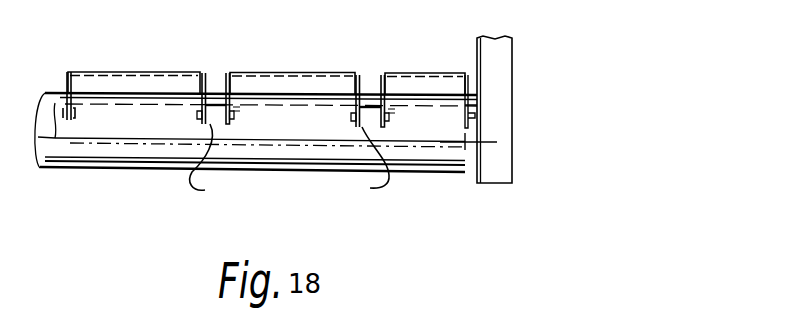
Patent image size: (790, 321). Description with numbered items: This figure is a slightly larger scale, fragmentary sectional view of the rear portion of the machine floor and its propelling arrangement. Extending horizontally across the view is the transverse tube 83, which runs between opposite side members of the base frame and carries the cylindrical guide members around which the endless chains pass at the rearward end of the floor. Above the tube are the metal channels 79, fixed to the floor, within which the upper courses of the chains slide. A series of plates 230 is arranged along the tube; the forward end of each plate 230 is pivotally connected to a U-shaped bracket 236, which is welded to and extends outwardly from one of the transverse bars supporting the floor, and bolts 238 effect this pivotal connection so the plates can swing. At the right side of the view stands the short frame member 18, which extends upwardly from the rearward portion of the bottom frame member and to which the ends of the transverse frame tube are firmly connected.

The short frame member 18 is at (508, 67).
The metal channel 79 is at (211, 50).
The transverse tube 83 is at (115, 167).
The plate 230 is at (149, 48).
The U-shaped bracket 236 is at (289, 163).
The bolt 238 is at (249, 112).